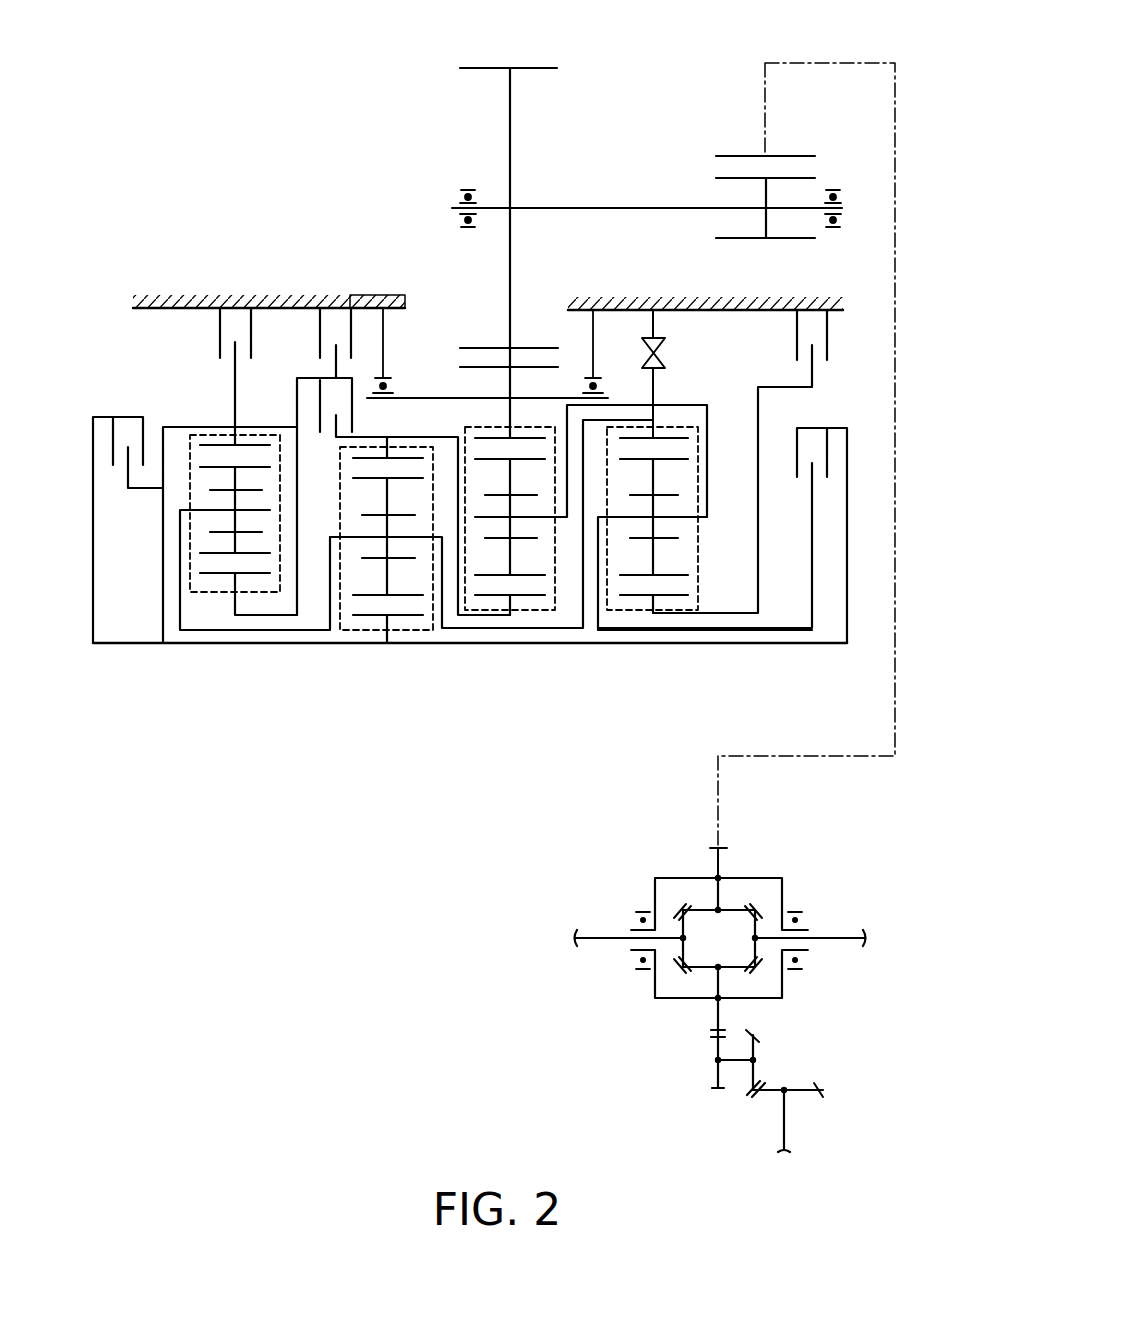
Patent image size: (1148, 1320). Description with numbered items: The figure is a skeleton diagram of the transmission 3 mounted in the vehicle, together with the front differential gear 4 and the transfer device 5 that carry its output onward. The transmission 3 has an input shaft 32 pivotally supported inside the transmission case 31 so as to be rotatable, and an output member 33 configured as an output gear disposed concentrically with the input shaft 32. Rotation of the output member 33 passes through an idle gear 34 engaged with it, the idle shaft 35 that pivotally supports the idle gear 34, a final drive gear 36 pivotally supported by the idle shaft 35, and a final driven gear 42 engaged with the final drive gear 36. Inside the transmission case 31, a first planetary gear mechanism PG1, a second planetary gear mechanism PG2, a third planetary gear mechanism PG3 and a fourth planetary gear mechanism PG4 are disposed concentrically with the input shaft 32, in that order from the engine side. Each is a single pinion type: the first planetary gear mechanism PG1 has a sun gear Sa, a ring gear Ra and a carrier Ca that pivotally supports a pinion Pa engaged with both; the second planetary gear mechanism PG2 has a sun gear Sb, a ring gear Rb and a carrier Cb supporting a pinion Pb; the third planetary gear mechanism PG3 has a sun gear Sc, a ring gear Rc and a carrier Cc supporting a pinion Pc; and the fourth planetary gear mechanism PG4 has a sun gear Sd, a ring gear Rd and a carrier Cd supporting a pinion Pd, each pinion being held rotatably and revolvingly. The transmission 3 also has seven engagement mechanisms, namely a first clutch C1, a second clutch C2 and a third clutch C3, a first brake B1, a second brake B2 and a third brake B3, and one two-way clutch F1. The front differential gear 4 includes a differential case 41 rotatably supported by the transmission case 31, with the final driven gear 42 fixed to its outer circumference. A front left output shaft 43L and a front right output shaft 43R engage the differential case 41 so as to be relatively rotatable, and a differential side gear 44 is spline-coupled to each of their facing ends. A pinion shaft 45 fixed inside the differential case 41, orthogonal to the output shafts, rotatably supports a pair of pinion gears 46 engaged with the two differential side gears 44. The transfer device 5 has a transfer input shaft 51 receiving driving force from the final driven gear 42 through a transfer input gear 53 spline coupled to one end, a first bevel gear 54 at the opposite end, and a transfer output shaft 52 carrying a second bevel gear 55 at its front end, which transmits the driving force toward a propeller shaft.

The transmission 3 is at (297, 180).
The front differential gear 4 is at (842, 882).
The transfer device 5 is at (834, 1042).
The transmission case 31 is at (200, 297).
The input shaft 32 is at (867, 627).
The output member 33 is at (560, 366).
The idle gear 34 is at (487, 66).
The idle shaft 35 is at (619, 207).
The final drive gear 36 is at (725, 178).
The differential case 41 is at (768, 878).
The final driven gear 42 is at (795, 168).
The front left output shaft 43L is at (596, 938).
The front right output shaft 43R is at (810, 940).
The differential side gear 44 is at (672, 910).
The pinion shaft 45 is at (725, 900).
The pinion gear 46 is at (697, 893).
The transfer input shaft 51 is at (739, 1065).
The transfer output shaft 52 is at (786, 1115).
The transfer input gear 53 is at (716, 1090).
The first bevel gear 54 is at (760, 1040).
The second bevel gear 55 is at (812, 1088).
The first brake B1 is at (740, 461).
The second brake B2 is at (335, 343).
The third brake B3 is at (235, 376).
The first clutch C1 is at (722, 535).
The second clutch C2 is at (403, 496).
The third clutch C3 is at (195, 530).
The two-way clutch F1 is at (670, 353).
The first planetary gear mechanism PG1 is at (639, 626).
The second planetary gear mechanism PG2 is at (484, 620).
The third planetary gear mechanism PG3 is at (358, 633).
The fourth planetary gear mechanism PG4 is at (246, 432).
The ring gear Ra is at (665, 436).
The ring gear Rb is at (527, 437).
The ring gear Rc is at (370, 460).
The ring gear Rd is at (253, 445).
The carrier Ca is at (693, 518).
The carrier Cb is at (530, 520).
The carrier Cc is at (410, 535).
The carrier Cd is at (213, 506).
The pinion Pa is at (678, 575).
The pinion Pb is at (532, 578).
The pinion Pc is at (398, 565).
The pinion Pd is at (213, 555).
The sun gear Sa is at (670, 598).
The sun gear Sb is at (529, 598).
The sun gear Sc is at (407, 632).
The sun gear Sd is at (212, 575).